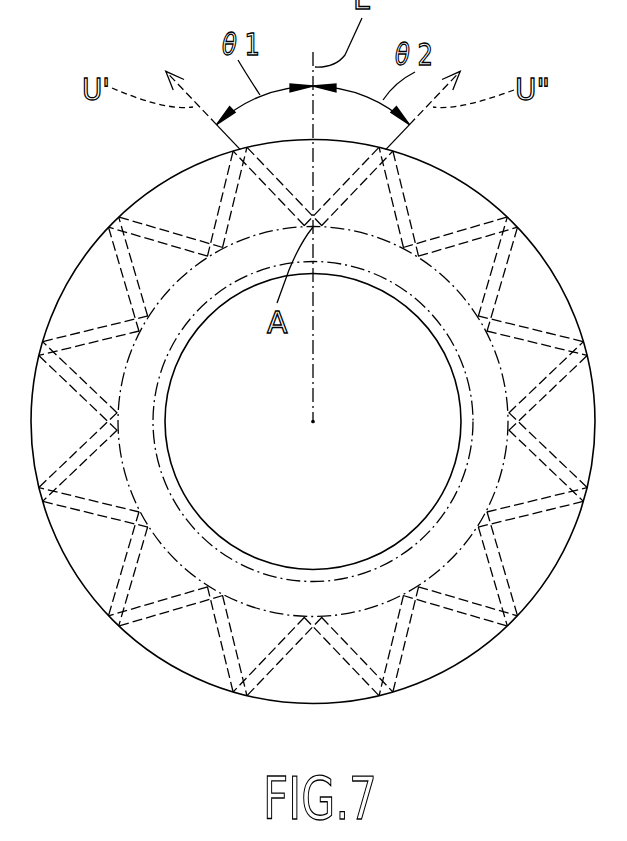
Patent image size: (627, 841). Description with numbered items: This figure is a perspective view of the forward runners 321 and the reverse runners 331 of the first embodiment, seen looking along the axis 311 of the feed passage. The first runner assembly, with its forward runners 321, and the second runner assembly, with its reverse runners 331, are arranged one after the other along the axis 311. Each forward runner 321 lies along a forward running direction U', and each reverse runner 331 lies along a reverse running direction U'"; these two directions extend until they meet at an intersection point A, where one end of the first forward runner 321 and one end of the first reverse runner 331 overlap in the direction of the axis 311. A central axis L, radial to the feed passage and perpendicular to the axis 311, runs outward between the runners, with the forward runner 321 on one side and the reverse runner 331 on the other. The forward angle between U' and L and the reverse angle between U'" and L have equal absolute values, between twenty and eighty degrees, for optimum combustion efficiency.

The axis 311 is at (313, 422).
The forward runner 321 is at (270, 178).
The reverse runner 331 is at (356, 178).